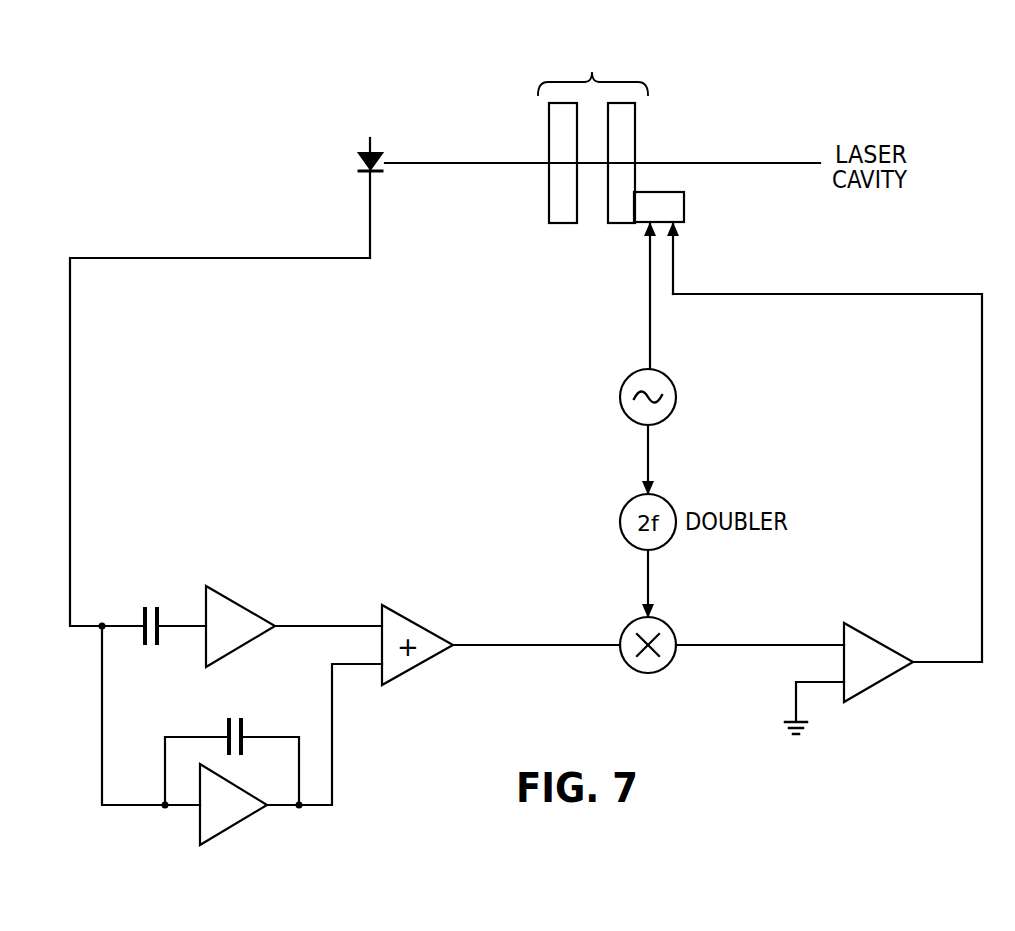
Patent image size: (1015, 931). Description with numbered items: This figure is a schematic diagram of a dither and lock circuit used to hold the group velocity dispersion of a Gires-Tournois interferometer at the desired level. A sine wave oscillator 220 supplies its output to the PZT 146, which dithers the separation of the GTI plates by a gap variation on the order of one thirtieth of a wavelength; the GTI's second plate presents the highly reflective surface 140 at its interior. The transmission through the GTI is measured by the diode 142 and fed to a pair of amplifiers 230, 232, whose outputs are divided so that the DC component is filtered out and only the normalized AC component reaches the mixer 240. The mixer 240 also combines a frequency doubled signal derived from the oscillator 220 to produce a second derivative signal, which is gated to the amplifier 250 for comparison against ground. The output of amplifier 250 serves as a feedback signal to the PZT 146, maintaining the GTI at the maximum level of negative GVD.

The surface of plate 140 is at (577, 216).
The diode 142 is at (360, 162).
The PZT 146 is at (684, 208).
The sine wave oscillator 220 is at (620, 397).
The amplifier 230 is at (237, 602).
The amplifier 232 is at (228, 830).
The mixer 240 is at (623, 630).
The amplifier 250 is at (870, 686).